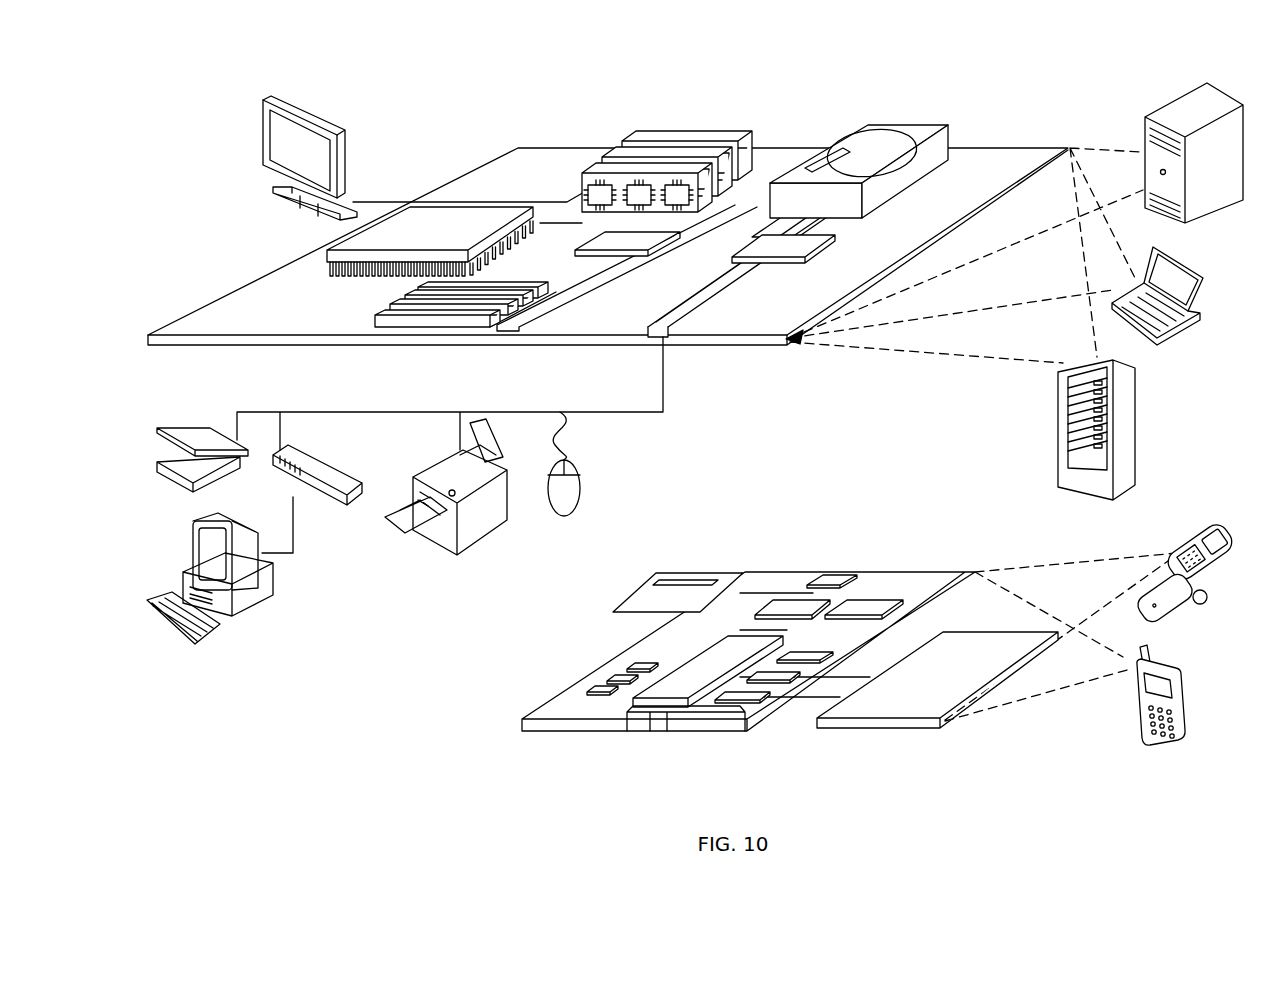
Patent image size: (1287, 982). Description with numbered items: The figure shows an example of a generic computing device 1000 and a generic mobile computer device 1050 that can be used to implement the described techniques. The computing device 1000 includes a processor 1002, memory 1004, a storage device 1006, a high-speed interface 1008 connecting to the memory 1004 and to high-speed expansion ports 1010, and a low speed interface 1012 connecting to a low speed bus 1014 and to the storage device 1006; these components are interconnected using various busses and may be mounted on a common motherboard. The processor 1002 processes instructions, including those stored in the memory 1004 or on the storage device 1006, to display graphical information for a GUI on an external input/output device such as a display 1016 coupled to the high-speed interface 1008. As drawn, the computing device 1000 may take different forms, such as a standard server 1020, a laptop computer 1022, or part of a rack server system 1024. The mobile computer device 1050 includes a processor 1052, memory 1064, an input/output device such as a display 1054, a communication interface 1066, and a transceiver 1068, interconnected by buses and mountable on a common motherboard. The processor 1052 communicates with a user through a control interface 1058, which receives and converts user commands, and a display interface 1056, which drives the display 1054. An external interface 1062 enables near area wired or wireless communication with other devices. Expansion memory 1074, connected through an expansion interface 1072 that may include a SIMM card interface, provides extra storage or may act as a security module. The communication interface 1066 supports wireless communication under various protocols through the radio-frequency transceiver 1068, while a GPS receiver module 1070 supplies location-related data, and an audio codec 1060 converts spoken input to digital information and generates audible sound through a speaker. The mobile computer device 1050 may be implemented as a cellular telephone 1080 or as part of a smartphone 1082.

The computing device 1000 is at (442, 127).
The processor 1002 is at (332, 257).
The memory 1004 is at (642, 148).
The storage device 1006 is at (855, 135).
The high-speed interface 1008 is at (603, 238).
The high-speed expansion ports 1010 is at (392, 310).
The low speed interface 1012 is at (768, 245).
The low speed bus 1014 is at (665, 336).
The display 1016 is at (268, 103).
The standard server 1020 is at (1144, 136).
The laptop computer 1022 is at (1205, 270).
The rack server system 1024 is at (1058, 452).
The mobile computer device 1050 is at (499, 726).
The processor 1052 is at (683, 692).
The display 1054 is at (903, 710).
The display interface 1056 is at (752, 702).
The control interface 1058 is at (780, 682).
The audio codec 1060 is at (801, 662).
The external interface 1062 is at (650, 722).
The memory 1064 is at (600, 686).
The communication interface 1066 is at (794, 609).
The transceiver 1068 is at (866, 611).
The GPS receiver module 1070 is at (840, 572).
The expansion interface 1072 is at (720, 584).
The expansion memory 1074 is at (655, 584).
The cellular telephone 1080 is at (1185, 503).
The smartphone 1082 is at (1127, 700).